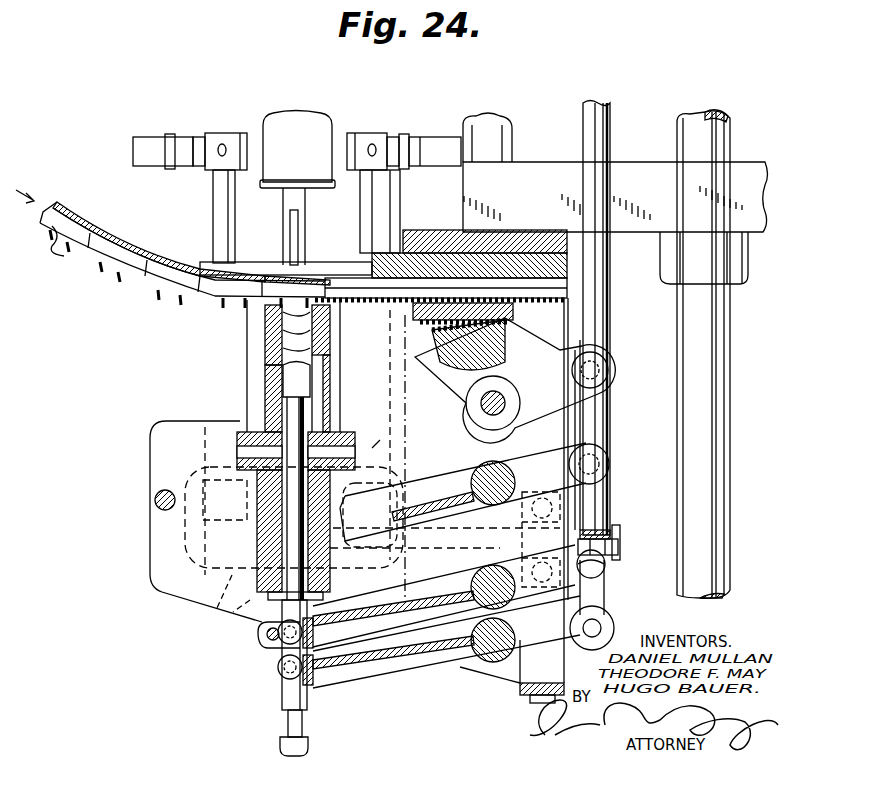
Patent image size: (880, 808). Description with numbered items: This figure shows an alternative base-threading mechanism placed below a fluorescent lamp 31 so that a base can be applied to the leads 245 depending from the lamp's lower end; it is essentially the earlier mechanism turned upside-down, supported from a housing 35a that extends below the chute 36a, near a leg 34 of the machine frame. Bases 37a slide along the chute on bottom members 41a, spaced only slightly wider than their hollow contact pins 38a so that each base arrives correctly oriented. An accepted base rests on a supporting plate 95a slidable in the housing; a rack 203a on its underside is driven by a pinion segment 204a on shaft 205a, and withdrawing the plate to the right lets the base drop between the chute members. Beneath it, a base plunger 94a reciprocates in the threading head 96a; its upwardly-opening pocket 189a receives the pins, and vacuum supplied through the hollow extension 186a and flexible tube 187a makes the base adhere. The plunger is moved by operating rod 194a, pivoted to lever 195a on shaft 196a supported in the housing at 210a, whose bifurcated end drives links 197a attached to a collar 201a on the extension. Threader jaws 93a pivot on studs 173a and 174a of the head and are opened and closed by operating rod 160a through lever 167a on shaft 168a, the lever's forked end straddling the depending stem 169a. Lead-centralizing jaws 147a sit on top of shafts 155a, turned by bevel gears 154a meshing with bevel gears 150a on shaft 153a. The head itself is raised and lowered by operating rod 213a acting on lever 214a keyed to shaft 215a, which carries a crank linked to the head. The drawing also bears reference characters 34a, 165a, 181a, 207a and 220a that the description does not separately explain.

The centralizing jaws 147a is at (157, 140).
The shafts 155a is at (222, 210).
The lamp 31 is at (320, 122).
The leads 245 is at (286, 205).
The rod 165a is at (300, 234).
The plate 181a is at (298, 270).
The frame bar 34a is at (510, 150).
The legs 34 is at (678, 370).
The operating rod 194a is at (610, 304).
The supporting plate 95a is at (515, 292).
The bases 37a is at (74, 212).
The chute 36a is at (128, 232).
The bottom members 41a is at (162, 292).
The contact pins 38a is at (106, 264).
The pocket 189a is at (240, 328).
The base plunger 94a is at (268, 344).
The threading head 96a is at (262, 382).
The threader jaws 93a is at (262, 424).
The stud 173a is at (238, 449).
The bevel gears 154a is at (200, 512).
The housing 35a is at (152, 584).
The bevel gears 150a is at (213, 609).
The depending stem 169a is at (258, 632).
The collar 201a is at (280, 645).
The links 197a is at (285, 674).
The hollow extension 186a is at (308, 712).
The flexible tube 187a is at (308, 745).
The rack 203a is at (430, 358).
The pinion segment 204a is at (508, 330).
The shaft 205a is at (490, 403).
The pivot pin 220a is at (592, 366).
The link arm 207a is at (598, 394).
The stud 174a is at (380, 443).
The operating rod 160a is at (596, 450).
The lever 167a is at (462, 478).
The shaft 168a is at (496, 468).
The shaft 215a is at (500, 558).
The shaft 153a is at (404, 558).
The lever 214a is at (390, 606).
The lever 195a is at (412, 666).
The shaft 196a is at (485, 662).
The operating rod 213a is at (600, 575).
The shaft support 210a is at (605, 618).